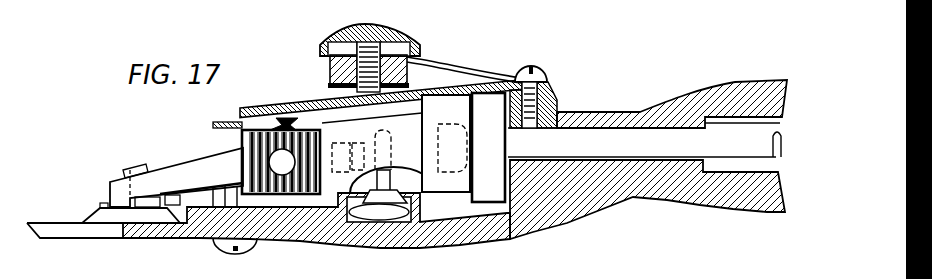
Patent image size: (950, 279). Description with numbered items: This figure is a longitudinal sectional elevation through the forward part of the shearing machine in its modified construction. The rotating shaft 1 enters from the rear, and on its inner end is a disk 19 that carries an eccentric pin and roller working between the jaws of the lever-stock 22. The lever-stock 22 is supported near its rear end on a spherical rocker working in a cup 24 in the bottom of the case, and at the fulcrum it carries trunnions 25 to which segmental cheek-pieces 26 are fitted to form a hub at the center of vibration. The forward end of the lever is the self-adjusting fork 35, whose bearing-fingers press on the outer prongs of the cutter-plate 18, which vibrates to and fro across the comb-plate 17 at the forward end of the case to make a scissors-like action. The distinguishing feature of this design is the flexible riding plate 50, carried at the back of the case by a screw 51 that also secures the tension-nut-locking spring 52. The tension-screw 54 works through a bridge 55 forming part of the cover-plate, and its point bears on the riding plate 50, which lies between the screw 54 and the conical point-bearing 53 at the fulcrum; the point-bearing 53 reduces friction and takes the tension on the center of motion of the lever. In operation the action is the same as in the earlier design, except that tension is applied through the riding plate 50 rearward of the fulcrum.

The rotating shaft 1 is at (647, 159).
The comb-plate 17 is at (113, 233).
The cutter-plate 18 is at (100, 210).
The disk 19 is at (463, 147).
The lever-stock 22 is at (375, 151).
The cup 24 is at (369, 238).
The trunnions 25 is at (282, 162).
The segmental cheek-pieces 26 is at (237, 156).
The fork 35 is at (176, 177).
The riding plate 50 is at (313, 104).
The screw 51 is at (538, 70).
The tension-nut-locking spring 52 is at (445, 65).
The point-bearing 53 is at (272, 108).
The tension-screw 54 is at (377, 29).
The bridge 55 is at (330, 75).